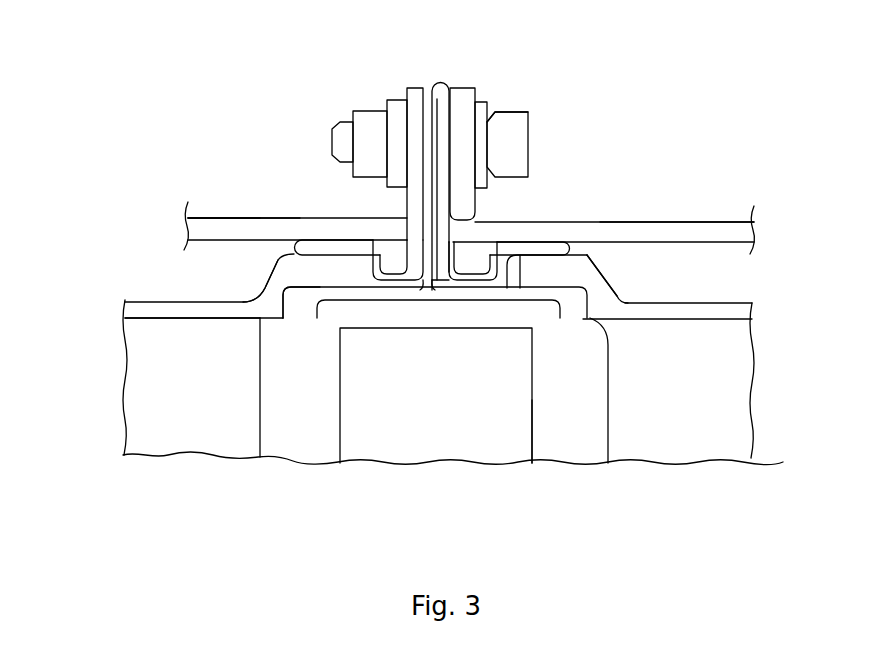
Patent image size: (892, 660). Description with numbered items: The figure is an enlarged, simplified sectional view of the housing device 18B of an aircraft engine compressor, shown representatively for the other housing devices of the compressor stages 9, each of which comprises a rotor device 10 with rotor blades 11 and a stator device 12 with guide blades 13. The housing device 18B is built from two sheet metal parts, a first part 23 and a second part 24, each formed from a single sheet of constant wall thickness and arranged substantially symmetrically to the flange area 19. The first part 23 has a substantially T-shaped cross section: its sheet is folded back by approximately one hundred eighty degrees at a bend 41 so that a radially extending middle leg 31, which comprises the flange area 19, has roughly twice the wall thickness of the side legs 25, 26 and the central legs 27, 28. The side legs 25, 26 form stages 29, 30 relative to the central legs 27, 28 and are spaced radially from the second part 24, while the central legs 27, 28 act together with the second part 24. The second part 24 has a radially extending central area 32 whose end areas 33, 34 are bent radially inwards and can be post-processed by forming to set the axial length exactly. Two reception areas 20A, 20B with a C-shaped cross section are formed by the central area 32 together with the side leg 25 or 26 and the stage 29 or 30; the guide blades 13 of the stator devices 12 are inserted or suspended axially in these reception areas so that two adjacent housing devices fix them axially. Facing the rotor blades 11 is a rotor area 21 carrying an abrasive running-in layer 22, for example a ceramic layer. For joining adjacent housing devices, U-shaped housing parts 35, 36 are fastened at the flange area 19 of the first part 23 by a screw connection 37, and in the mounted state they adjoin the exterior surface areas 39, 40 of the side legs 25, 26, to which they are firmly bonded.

The compressor stage 9 is at (612, 122).
The rotor device 10 is at (534, 453).
The rotor blades 11 is at (492, 443).
The stator device 12 is at (116, 362).
The guide blades 13 is at (148, 424).
The housing device 18B is at (185, 97).
The flange area 19 is at (444, 115).
The reception area 20A is at (286, 298).
The reception area 20B is at (587, 286).
The rotor area 21 is at (334, 295).
The abrasive running-in layer 22 is at (478, 305).
The first part 23 is at (462, 146).
The second part 24 is at (395, 305).
The side leg 25 is at (317, 240).
The side leg 26 is at (545, 241).
The central leg 27 is at (397, 187).
The central leg 28 is at (490, 243).
The stage 29 is at (378, 248).
The stage 30 is at (500, 247).
The middle leg 31 is at (424, 130).
The central area 32 is at (443, 293).
The end area 33 is at (310, 300).
The end area 34 is at (553, 304).
The housing part 35 is at (222, 228).
The housing part 36 is at (740, 221).
The screw connection 37 is at (505, 140).
The exterior surface area 39 is at (332, 238).
The exterior surface area 40 is at (525, 249).
The bend 41 is at (434, 95).